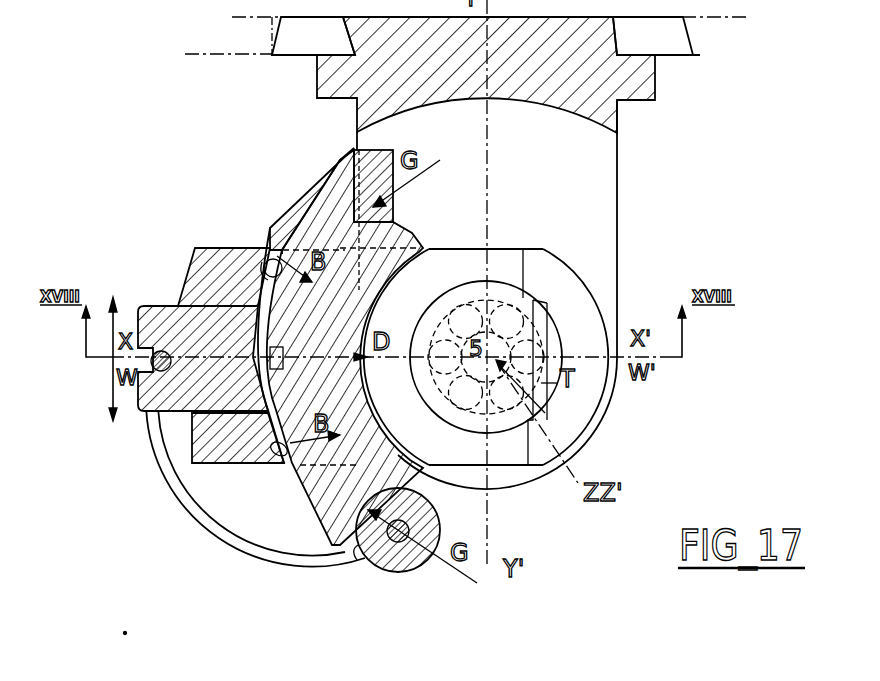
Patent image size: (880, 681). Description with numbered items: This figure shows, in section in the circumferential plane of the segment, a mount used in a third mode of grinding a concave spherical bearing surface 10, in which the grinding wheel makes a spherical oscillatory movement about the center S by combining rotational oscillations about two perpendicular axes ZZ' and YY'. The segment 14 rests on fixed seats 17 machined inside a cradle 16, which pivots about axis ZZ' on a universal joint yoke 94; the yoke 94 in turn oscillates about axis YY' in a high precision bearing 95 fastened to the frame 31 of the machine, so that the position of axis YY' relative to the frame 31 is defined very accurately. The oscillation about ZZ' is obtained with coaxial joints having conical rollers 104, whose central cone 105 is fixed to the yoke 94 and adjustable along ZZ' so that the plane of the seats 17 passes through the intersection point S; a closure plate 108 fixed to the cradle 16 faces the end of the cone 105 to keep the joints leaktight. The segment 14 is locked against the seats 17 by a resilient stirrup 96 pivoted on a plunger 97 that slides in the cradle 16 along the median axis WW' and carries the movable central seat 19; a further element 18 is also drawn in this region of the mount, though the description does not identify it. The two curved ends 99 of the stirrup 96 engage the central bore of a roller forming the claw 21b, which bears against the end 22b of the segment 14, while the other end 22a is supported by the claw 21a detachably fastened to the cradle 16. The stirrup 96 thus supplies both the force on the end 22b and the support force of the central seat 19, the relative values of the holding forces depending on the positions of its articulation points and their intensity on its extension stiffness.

The spherical bearing surface 10 is at (402, 273).
The segment 14 is at (312, 203).
The cradle 16 is at (195, 248).
The fixed seats 17 is at (237, 248).
The annular element 18 is at (192, 466).
The movable central seat 19 is at (262, 355).
The claw 21a is at (394, 150).
The claw 21b is at (390, 573).
The end of the segment 22a is at (342, 163).
The end of the segment 22b is at (357, 560).
The frame 31 is at (186, 54).
The universal joint yoke 94 is at (619, 176).
The bearing 95 is at (695, 57).
The resilient stirrup 96 is at (203, 520).
The plunger 97 is at (138, 412).
The curved ends 99 is at (438, 525).
The conical rollers 104 is at (543, 315).
The central cone 105 is at (528, 333).
The closure plate 108 is at (500, 288).